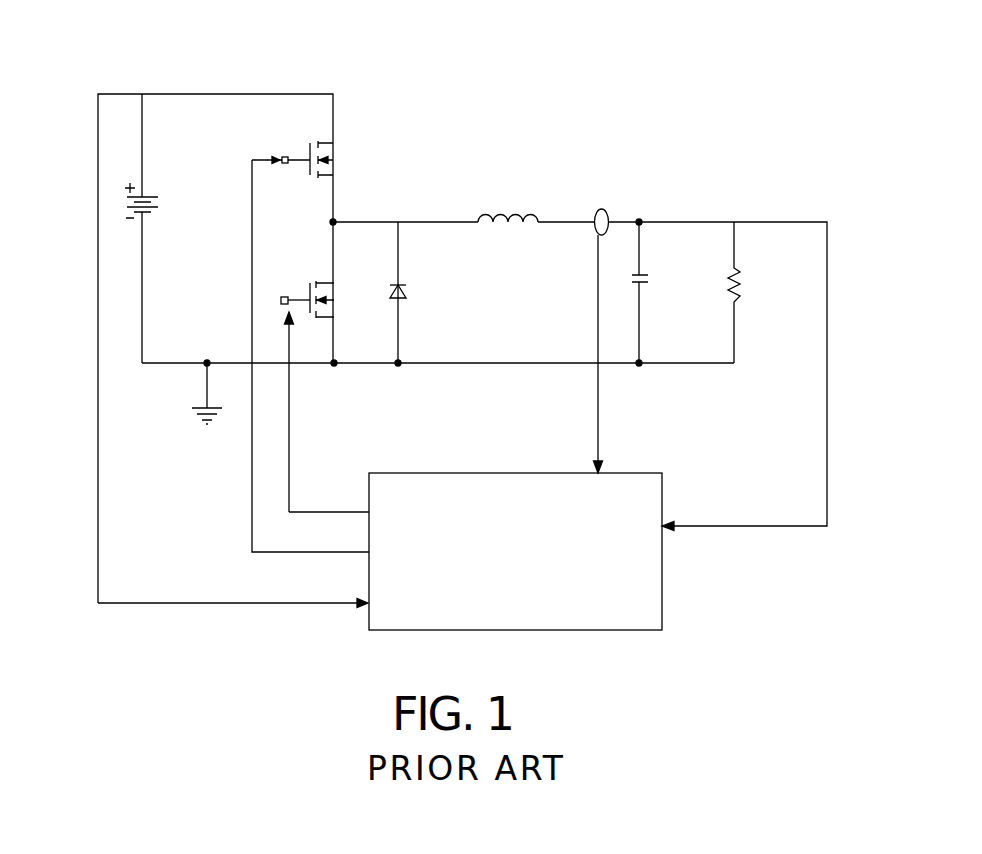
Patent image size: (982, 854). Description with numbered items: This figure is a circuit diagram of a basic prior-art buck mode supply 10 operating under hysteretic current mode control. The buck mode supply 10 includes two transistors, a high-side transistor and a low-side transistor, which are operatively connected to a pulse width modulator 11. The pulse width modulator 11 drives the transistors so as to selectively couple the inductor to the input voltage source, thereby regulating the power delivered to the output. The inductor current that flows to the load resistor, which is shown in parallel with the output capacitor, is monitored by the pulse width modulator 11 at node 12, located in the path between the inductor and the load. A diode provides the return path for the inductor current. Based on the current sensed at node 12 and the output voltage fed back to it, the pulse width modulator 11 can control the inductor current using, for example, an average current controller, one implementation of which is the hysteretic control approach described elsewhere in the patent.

The buck mode supply 10 is at (837, 187).
The pulse width modulator 11 is at (662, 579).
The node 12 is at (612, 183).